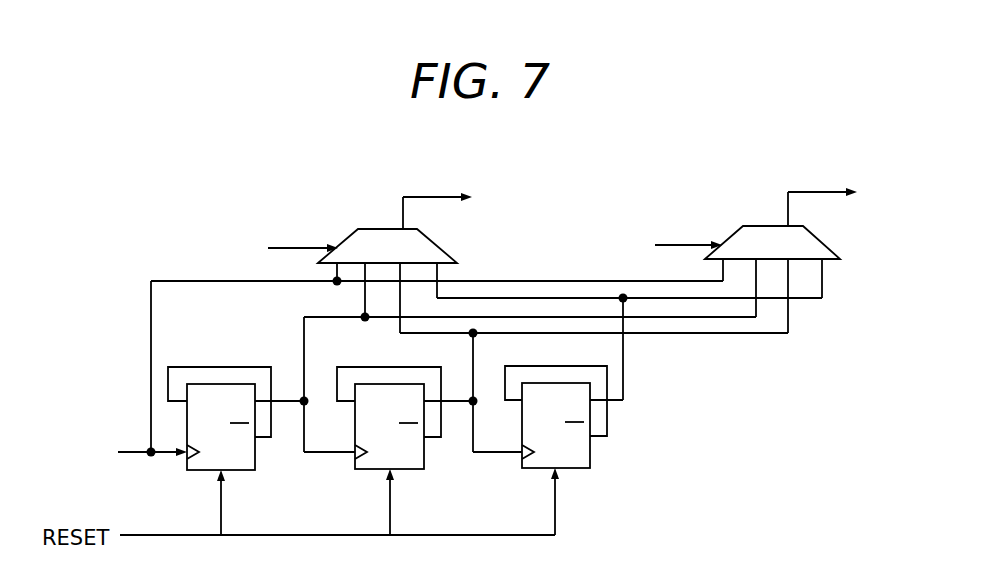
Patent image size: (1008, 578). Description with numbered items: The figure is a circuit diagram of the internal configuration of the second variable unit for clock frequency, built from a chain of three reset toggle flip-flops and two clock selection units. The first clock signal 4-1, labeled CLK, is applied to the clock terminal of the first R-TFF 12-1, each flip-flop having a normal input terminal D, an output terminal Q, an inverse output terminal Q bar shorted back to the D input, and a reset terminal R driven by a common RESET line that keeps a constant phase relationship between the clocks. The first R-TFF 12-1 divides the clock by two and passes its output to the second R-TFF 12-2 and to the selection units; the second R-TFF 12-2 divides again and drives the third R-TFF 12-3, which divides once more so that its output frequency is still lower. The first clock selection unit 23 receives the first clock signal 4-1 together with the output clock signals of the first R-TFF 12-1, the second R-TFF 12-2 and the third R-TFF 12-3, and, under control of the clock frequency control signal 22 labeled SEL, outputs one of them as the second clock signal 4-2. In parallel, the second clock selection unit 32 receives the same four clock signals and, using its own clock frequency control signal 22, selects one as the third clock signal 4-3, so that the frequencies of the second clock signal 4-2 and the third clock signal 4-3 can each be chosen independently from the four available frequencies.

The first clock signal 4-1 is at (148, 449).
The second clock signal 4-2 is at (402, 196).
The third clock signal 4-3 is at (787, 192).
The clock frequency control signal 22 is at (305, 247).
The first clock selection unit 23 is at (454, 260).
The second clock selection unit 32 is at (838, 256).
The first R-TFF 12-1 is at (256, 458).
The second R-TFF 12-2 is at (425, 458).
The third R-TFF 12-3 is at (591, 457).